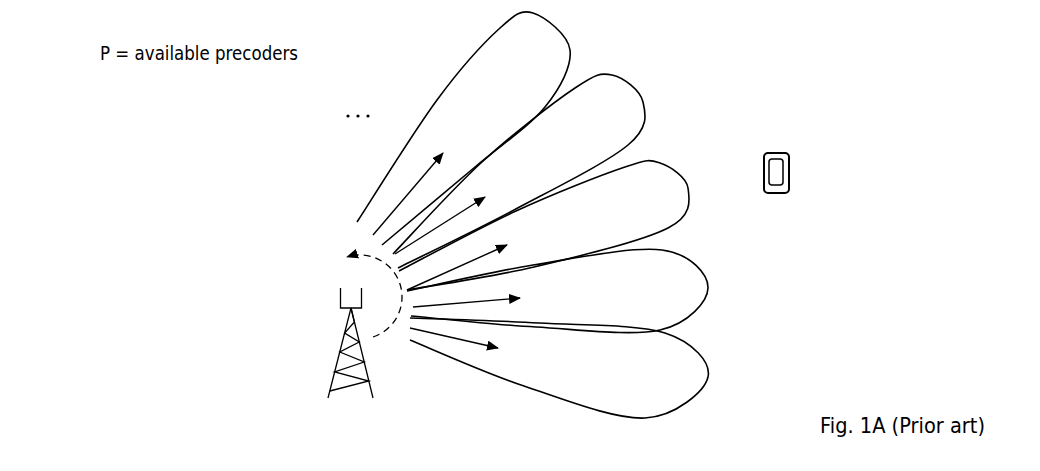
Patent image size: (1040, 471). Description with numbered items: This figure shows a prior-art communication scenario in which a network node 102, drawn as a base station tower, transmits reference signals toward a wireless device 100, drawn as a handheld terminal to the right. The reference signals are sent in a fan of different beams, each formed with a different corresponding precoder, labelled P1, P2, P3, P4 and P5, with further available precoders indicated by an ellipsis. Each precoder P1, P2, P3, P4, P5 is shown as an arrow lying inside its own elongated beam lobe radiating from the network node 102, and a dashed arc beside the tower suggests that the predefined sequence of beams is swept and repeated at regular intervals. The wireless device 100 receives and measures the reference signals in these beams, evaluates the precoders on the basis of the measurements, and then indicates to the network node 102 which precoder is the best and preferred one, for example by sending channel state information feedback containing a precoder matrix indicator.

The wireless device 100 is at (790, 168).
The network node 102 is at (318, 291).
The precoder P1 is at (559, 368).
The precoder P2 is at (557, 290).
The precoder P3 is at (544, 225).
The precoder P4 is at (519, 171).
The precoder P5 is at (463, 128).